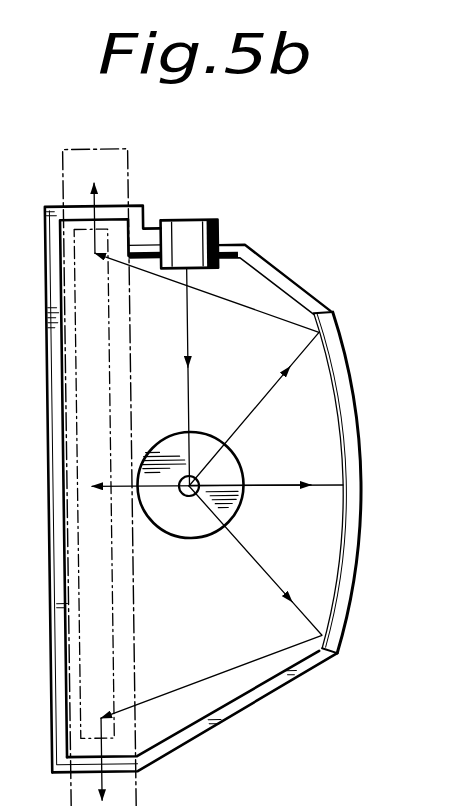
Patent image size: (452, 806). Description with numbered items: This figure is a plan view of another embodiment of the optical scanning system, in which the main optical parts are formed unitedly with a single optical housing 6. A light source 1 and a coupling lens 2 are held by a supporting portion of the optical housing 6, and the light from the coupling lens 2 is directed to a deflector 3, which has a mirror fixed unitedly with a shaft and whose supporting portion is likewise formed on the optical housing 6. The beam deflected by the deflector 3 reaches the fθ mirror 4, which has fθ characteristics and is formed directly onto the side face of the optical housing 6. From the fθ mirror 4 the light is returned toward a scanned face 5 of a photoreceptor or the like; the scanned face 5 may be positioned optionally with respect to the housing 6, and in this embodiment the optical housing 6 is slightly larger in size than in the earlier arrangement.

The light source 1 is at (200, 223).
The coupling lens 2 is at (205, 220).
The deflector 3 is at (195, 527).
The fθ mirror 4 is at (339, 364).
The scanned face 5 is at (137, 188).
The optical housing 6 is at (237, 684).